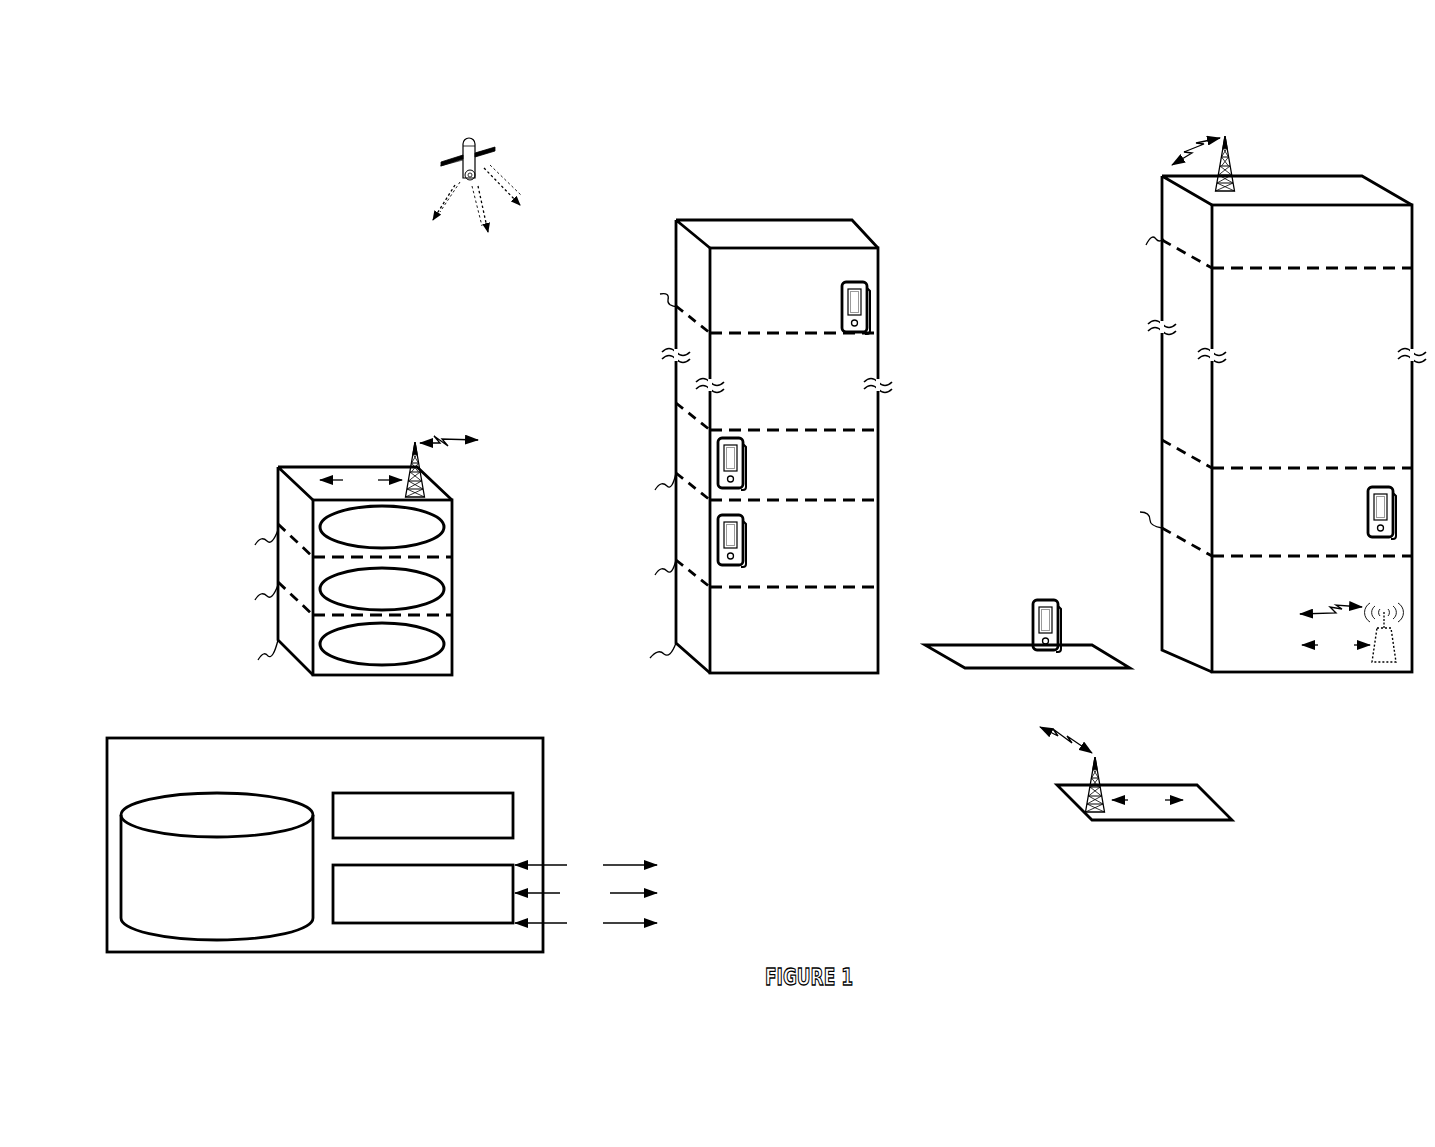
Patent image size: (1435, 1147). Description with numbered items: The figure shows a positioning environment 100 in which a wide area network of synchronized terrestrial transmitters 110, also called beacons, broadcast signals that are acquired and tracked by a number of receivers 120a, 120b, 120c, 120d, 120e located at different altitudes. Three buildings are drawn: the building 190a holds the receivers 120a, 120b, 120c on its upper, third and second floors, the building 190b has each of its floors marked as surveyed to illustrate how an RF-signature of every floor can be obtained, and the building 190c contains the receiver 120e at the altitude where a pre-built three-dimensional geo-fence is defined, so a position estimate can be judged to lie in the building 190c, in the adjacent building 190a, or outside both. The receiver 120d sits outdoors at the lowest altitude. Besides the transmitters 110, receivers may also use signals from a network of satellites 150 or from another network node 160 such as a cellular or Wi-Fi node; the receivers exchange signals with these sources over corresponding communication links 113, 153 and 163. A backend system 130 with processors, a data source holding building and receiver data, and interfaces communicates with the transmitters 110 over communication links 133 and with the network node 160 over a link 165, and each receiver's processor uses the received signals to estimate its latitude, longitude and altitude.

The positioning environment 100 is at (136, 124).
The transmitter 110 is at (413, 449).
The communication link 113 is at (446, 439).
The receiver 120a is at (842, 300).
The receiver 120b is at (748, 455).
The receiver 120c is at (747, 530).
The receiver 120d is at (1033, 612).
The receiver 120e is at (1368, 508).
The backend system 130 is at (382, 845).
The communication link 133 is at (751, 702).
The satellites 150 is at (502, 137).
The communication link 153 is at (431, 193).
The network node 160 is at (1402, 650).
The communication link 163 is at (1328, 608).
The communication link 165 is at (942, 755).
The building 190a is at (784, 675).
The building 190b is at (372, 679).
The building 190c is at (1343, 675).